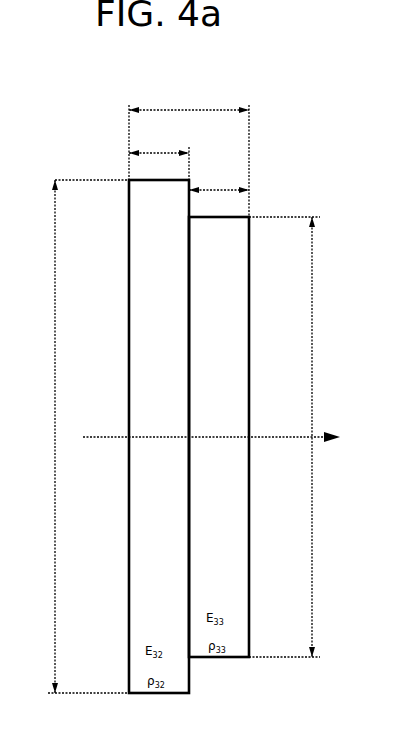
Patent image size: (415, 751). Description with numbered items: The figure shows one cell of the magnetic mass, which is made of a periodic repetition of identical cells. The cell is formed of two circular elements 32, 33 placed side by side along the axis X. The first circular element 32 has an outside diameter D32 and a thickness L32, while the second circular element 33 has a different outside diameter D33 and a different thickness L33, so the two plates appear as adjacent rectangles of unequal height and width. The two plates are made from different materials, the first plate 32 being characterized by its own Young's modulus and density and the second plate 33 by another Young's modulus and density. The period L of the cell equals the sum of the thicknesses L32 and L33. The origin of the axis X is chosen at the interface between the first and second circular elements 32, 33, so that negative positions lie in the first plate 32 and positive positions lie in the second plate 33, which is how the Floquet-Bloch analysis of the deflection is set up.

The first circular element 32 is at (150, 313).
The second circular element 33 is at (220, 335).
The outside diameter of the first circular element D32 is at (75, 436).
The outside diameter of the second circular element D33 is at (295, 437).
The period of the cell L is at (189, 155).
The thickness of the first circular element L32 is at (159, 158).
The thickness of the second circular element L33 is at (219, 184).
The axis X is at (215, 447).